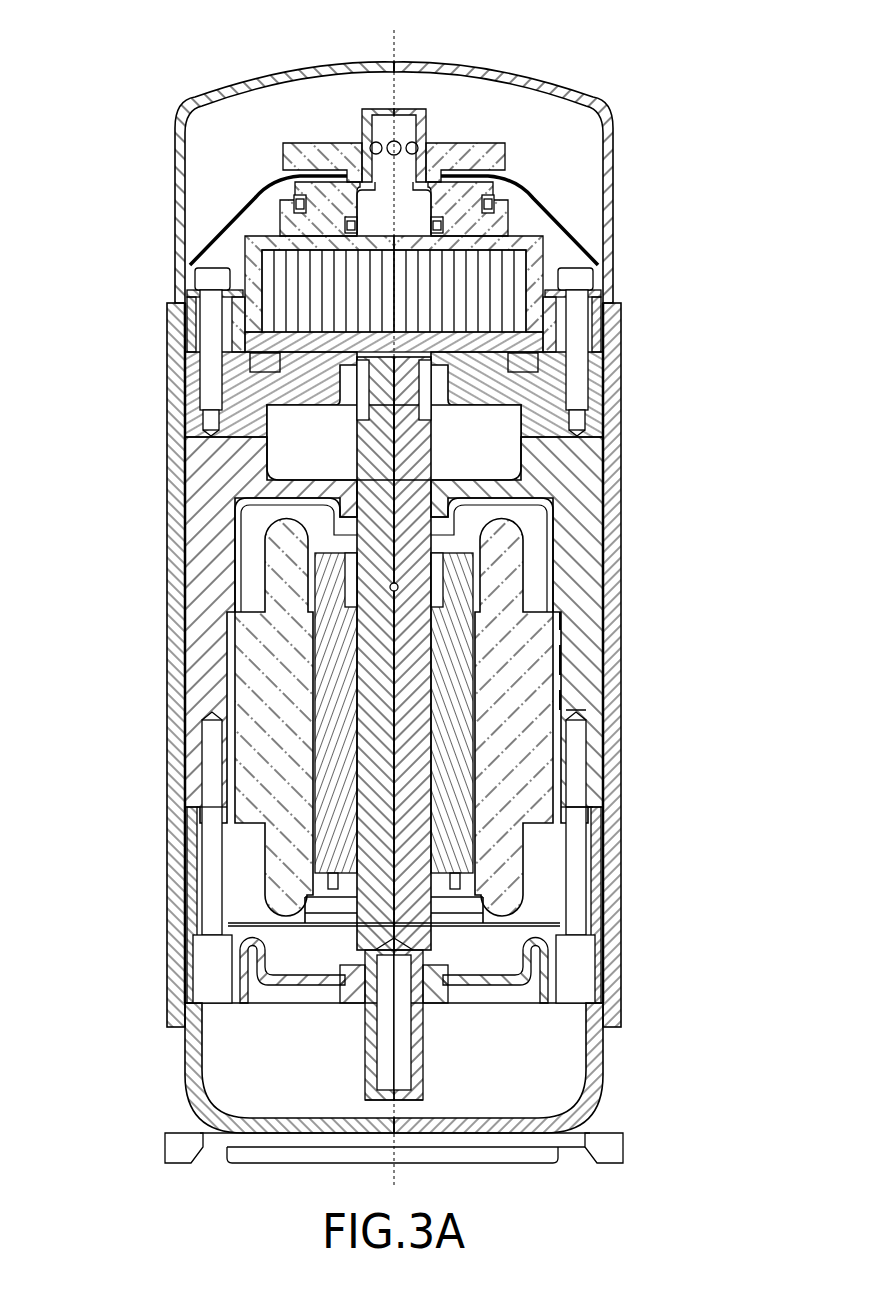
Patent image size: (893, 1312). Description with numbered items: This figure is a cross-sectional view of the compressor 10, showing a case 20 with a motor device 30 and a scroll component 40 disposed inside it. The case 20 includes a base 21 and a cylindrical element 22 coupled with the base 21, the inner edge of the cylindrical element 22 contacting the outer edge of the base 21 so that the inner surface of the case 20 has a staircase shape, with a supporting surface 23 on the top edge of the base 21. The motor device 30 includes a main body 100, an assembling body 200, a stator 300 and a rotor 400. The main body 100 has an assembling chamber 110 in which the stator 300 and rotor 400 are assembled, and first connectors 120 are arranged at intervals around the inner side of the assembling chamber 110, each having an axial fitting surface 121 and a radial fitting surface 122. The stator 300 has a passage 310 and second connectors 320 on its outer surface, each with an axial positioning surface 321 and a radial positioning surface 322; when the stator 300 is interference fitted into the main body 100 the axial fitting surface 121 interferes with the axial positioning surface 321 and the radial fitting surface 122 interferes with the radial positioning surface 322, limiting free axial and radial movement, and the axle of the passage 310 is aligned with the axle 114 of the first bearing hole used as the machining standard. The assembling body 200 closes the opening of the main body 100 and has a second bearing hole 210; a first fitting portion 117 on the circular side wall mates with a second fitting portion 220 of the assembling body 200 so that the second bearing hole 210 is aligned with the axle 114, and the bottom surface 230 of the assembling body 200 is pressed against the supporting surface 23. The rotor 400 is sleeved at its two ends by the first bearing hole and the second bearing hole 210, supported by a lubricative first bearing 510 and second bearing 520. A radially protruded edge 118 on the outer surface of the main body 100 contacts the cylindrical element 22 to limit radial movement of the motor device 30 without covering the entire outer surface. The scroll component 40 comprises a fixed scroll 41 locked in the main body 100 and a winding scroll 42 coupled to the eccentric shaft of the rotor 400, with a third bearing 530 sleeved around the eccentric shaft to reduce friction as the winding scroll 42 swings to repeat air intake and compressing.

The compressor 10 is at (95, 30).
The axle 114 is at (400, 47).
The scroll component 40 is at (530, 196).
The fixed scroll 41 is at (262, 192).
The winding scroll 42 is at (252, 240).
The third bearing 530 is at (605, 392).
The motor device 30 is at (605, 470).
The first bearing 510 is at (605, 490).
The case 20 is at (640, 512).
The passage 310 is at (480, 572).
The axial positioning surface 321 is at (560, 598).
The axial fitting surface 121 is at (562, 622).
The first connectors 120 is at (585, 660).
The radial fitting surface 122 is at (562, 700).
The radial positioning surface 322 is at (572, 716).
The second connectors 320 is at (572, 742).
The second fitting portion 220 is at (572, 810).
The first fitting portion 117 is at (600, 812).
The assembling chamber 110 is at (177, 478).
The radially protruded edge 118 is at (185, 533).
The main body 100 is at (178, 572).
The stator 300 is at (226, 631).
The cylindrical element 22 is at (185, 660).
The assembling body 200 is at (176, 912).
The supporting surface 23 is at (202, 1002).
The base 21 is at (185, 1065).
The bottom surface 230 is at (232, 1004).
The rotor 400 is at (340, 1088).
The second bearing hole 210 is at (362, 1006).
The second bearing 520 is at (432, 1006).